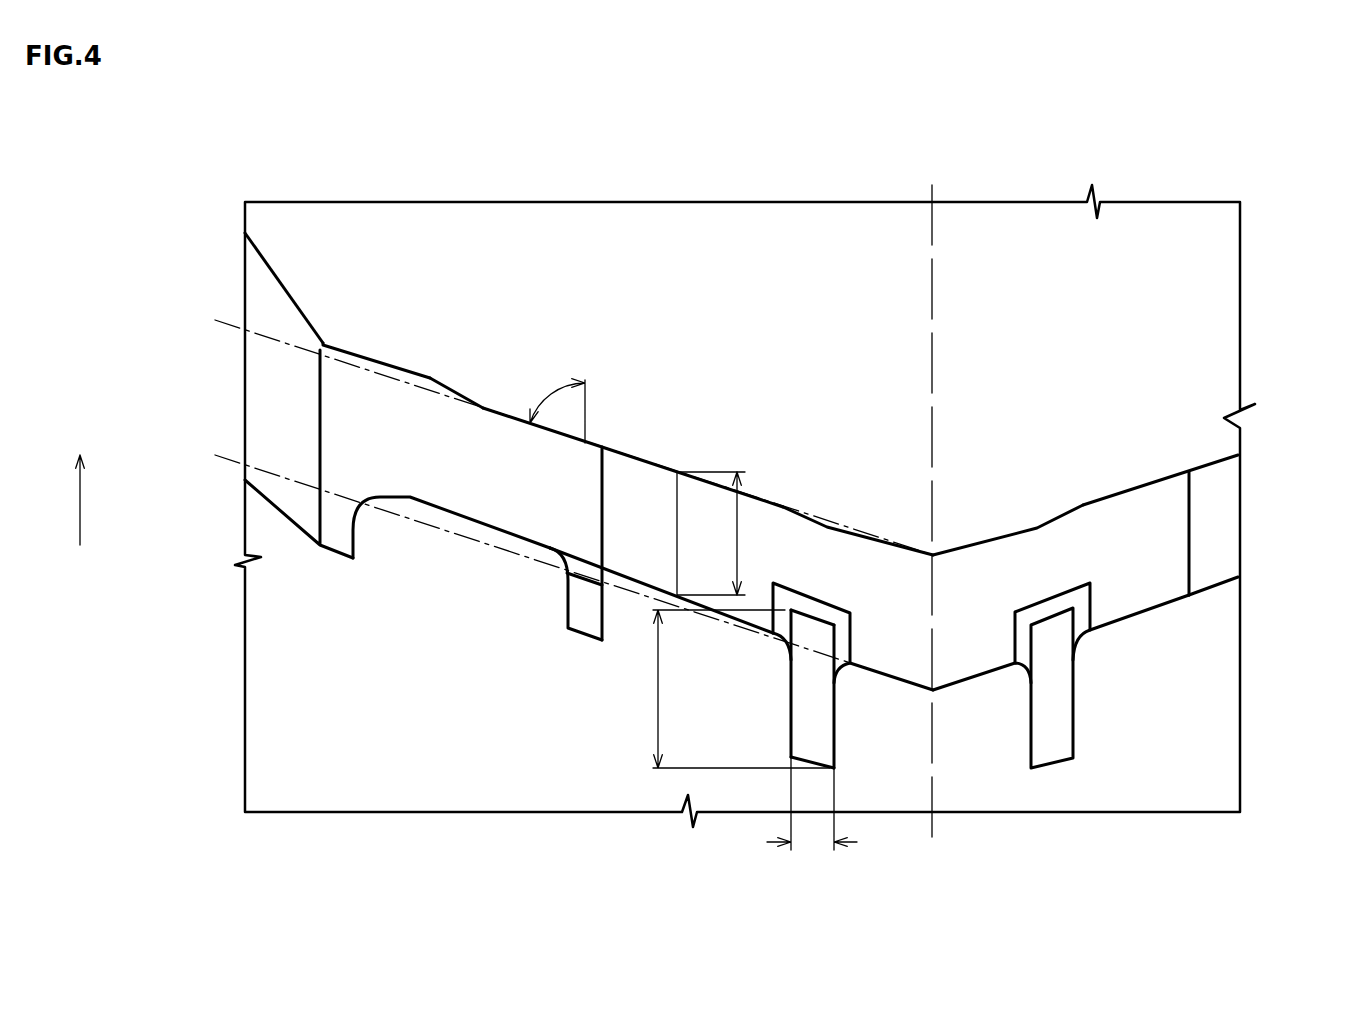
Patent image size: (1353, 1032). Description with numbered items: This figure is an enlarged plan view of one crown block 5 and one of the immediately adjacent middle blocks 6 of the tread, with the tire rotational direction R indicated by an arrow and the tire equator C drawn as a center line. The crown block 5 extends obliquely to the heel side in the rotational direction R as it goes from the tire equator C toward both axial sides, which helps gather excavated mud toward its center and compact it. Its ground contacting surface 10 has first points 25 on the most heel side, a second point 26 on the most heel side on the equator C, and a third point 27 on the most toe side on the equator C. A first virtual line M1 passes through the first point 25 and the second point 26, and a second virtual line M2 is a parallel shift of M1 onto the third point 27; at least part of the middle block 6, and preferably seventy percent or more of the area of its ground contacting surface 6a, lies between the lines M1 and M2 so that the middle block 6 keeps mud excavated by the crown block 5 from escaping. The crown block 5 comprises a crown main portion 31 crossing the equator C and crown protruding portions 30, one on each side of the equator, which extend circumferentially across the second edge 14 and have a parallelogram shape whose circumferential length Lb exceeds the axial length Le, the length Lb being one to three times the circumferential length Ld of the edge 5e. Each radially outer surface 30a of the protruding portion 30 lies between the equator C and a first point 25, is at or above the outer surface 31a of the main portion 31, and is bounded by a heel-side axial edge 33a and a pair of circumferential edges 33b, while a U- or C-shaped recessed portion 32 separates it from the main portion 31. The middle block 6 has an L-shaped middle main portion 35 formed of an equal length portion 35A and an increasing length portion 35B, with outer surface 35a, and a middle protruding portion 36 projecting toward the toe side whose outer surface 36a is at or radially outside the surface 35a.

The crown block 5 is at (1128, 469).
The edge of crown block 5e is at (677, 533).
The middle block 6 is at (487, 351).
The ground contacting surface of middle block 6a is at (363, 427).
The ground contacting surface 10 is at (840, 567).
The second edge 14 is at (1160, 610).
The first point 25 is at (677, 471).
The second point 26 is at (933, 555).
The third point 27 is at (933, 690).
The crown protruding portion 30 is at (853, 746).
The radially outer surface of crown protruding portion 30a is at (1050, 733).
The crown main portion 31 is at (1207, 537).
The outer surface of crown main portion 31a is at (1147, 533).
The recessed portion 32 is at (1070, 600).
The axial edge 33a is at (813, 595).
The circumferential edge 33b is at (790, 705).
The middle main portion 35 is at (460, 152).
The equal length portion 35A is at (447, 374).
The increasing length portion 35B is at (348, 334).
The outer surface of middle main portion 35a is at (478, 473).
The middle protruding portion 36 is at (566, 655).
The outer surface of middle protruding portion 36a is at (583, 607).
The tire equator C is at (931, 492).
The first virtual line M1 is at (288, 338).
The second virtual line M2 is at (288, 480).
The tire rotational direction R is at (80, 483).
The length in the tire circumferential direction of crown protruding portion Lb is at (657, 688).
The length in the tire circumferential direction of edge Ld is at (738, 530).
The length in the tire axial direction of crown protruding portion Le is at (812, 820).